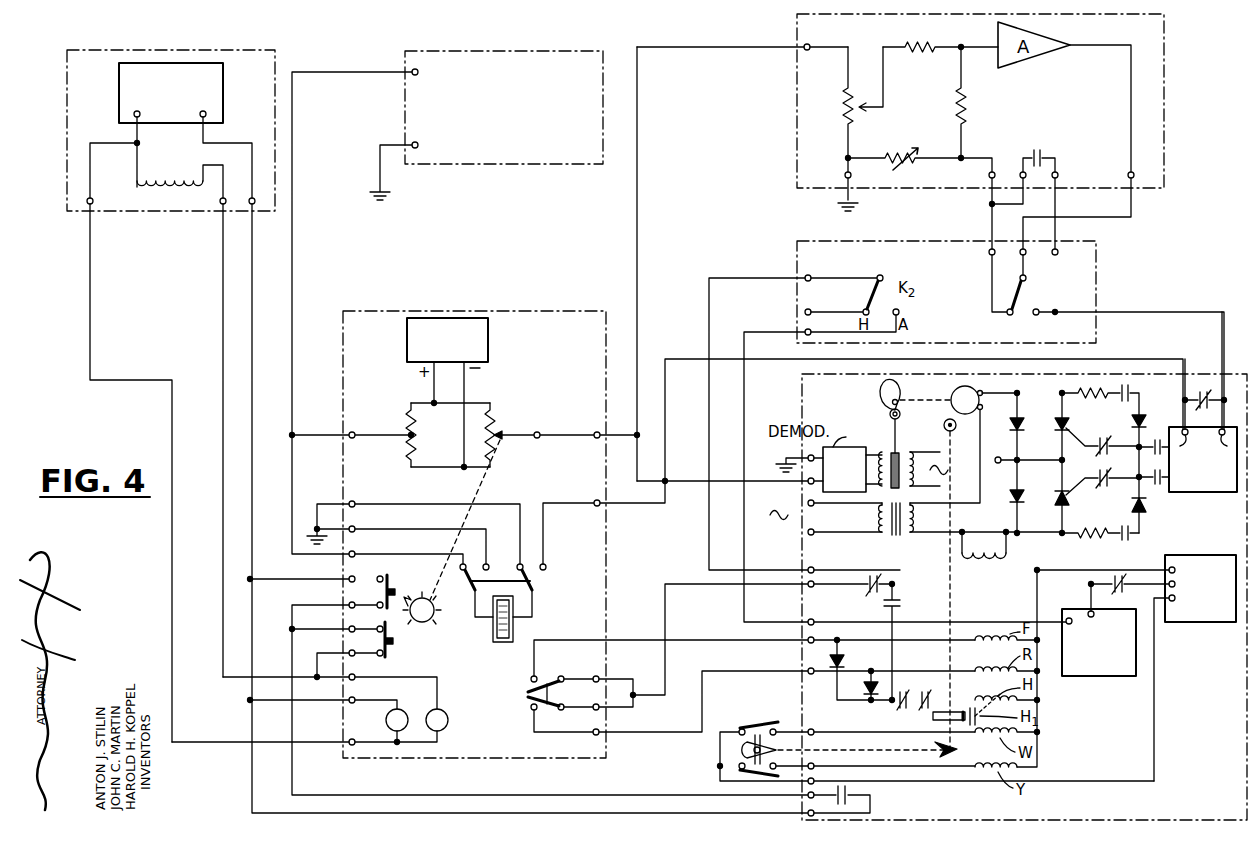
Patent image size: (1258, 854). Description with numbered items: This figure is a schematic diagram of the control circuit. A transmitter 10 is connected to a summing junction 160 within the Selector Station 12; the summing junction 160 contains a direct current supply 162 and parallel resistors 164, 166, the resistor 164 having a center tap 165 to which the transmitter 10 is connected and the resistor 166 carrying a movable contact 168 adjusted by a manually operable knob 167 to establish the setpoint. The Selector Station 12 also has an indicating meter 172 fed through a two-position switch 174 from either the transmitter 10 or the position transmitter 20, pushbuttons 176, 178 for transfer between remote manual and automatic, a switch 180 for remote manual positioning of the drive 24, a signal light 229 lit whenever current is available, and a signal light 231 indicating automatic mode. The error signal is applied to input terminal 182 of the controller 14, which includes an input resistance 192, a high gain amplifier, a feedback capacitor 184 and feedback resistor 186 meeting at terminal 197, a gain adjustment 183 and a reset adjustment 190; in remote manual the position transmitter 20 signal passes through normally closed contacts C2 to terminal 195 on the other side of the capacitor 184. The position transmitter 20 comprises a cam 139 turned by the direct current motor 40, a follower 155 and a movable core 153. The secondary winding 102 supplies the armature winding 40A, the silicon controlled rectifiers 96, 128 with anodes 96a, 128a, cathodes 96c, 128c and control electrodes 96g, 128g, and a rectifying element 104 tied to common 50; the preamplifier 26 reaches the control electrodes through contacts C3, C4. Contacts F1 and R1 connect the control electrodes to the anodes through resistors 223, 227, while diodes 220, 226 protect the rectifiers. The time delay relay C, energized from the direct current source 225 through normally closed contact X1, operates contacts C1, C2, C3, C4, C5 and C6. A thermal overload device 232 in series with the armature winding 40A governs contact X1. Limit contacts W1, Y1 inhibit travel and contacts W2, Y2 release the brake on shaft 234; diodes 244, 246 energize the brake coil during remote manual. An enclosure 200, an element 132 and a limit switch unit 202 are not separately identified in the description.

The DC supply / power unit 200 is at (160, 50).
The transmitter 10 is at (588, 51).
The controller 14 is at (1164, 40).
The input terminal 182 is at (809, 45).
The gain adjustment 183 is at (846, 110).
The input resistance 192 is at (930, 47).
The feedback resistor 186 is at (967, 106).
The reset adjustment 190 is at (889, 152).
The terminal 197 is at (990, 205).
The feedback capacitor 184 is at (1042, 150).
The terminal 195 is at (1055, 310).
The Selector Station 12 is at (575, 311).
The direct current supply 162 is at (490, 336).
The summing junction 160 is at (453, 418).
The resistor 164 is at (408, 421).
The center tap 165 is at (408, 443).
The resistor 166 is at (494, 421).
The movable contact 168 is at (500, 438).
The manually operable knob 167 is at (432, 622).
The indicating meter 172 is at (505, 643).
The two-position switch 174 is at (537, 588).
The pushbutton 176 is at (390, 584).
The pushbutton 178 is at (390, 650).
The switch 180 is at (562, 696).
The signal light 229 is at (385, 722).
The signal light 231 is at (446, 729).
The drive 24 is at (800, 393).
The cam 139 is at (884, 389).
The follower 155 is at (889, 414).
The position transmitter 20 is at (884, 434).
The movable core 153 is at (897, 452).
The armature winding 40A is at (954, 392).
The direct current motor 40 is at (948, 421).
The diode 132 is at (1012, 426).
The rectifying element 104 is at (1012, 502).
The terminal 50 is at (997, 456).
The silicon controlled rectifier 96 is at (1071, 425).
The anode electrode 96a is at (1058, 400).
The cathode 96c is at (1058, 437).
The control electrode 96g is at (1079, 447).
The silicon controlled rectifier 128 is at (1068, 505).
The anode 128a is at (1058, 508).
The cathode 128c is at (1058, 490).
The control electrode 128g is at (1080, 481).
The resistor 223 is at (1080, 385).
The diode 220 is at (1142, 416).
The diode 226 is at (1148, 510).
The resistor 227 is at (1098, 540).
The manual reset thermal overload device 232 is at (966, 531).
The secondary winding 102 is at (930, 532).
The shaft 234 is at (951, 607).
The diode 244 is at (847, 658).
The diode 246 is at (862, 686).
The limit switch 202 is at (745, 748).
The direct current source 225 is at (1192, 622).
The preamplifier 26 is at (1203, 402).
The time delay relay C is at (1114, 677).
The hold-in contact C1 is at (850, 783).
The normally closed contacts C2 is at (1200, 390).
The normally open contact C3 is at (1156, 440).
The normally open contact C4 is at (1162, 490).
The contact C5 is at (902, 603).
The contact C6 is at (868, 592).
The contact W1 is at (1100, 437).
The normally closed contact W2 is at (900, 710).
The contact Y1 is at (1108, 488).
The normally closed contact Y2 is at (922, 710).
The normally closed contact X1 is at (1118, 592).
The contact R1 is at (1127, 543).
The contact F1 is at (1126, 380).